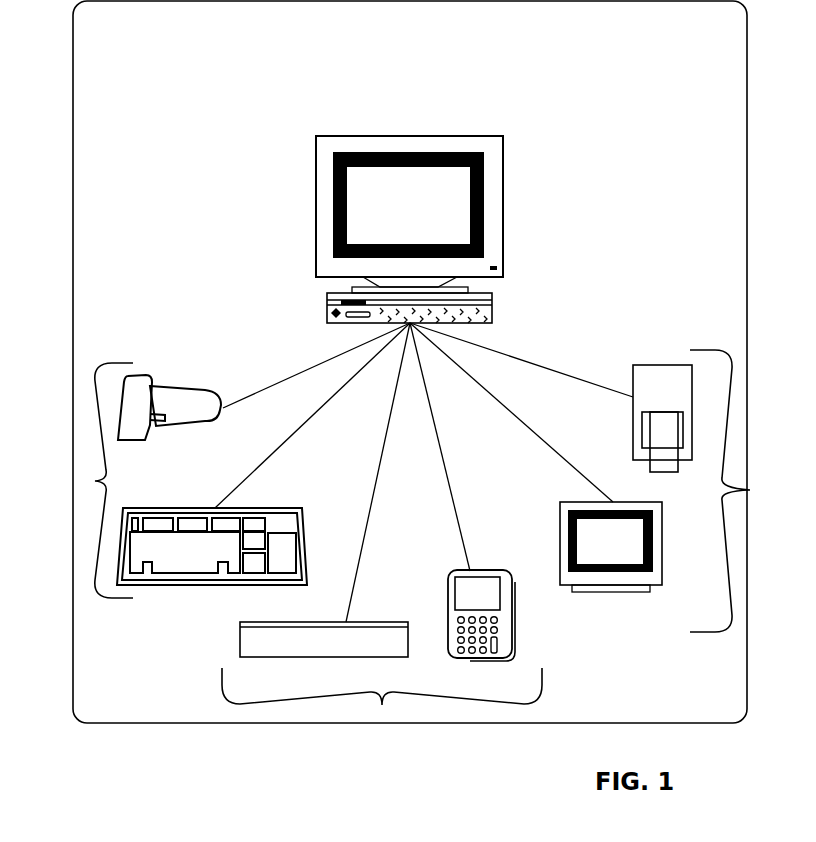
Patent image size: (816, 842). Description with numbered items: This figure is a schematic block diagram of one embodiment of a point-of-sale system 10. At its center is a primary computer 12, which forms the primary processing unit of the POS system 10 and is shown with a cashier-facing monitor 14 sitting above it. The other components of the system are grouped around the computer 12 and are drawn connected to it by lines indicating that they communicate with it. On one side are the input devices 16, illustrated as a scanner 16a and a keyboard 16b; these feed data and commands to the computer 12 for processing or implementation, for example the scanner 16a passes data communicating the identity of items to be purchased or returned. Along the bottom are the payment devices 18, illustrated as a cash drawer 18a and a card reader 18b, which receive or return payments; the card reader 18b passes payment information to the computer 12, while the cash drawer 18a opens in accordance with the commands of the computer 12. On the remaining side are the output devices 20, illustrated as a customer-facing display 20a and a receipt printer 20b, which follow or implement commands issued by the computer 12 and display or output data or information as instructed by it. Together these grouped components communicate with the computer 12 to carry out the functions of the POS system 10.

The POS system 10 is at (582, 62).
The computer 12 is at (516, 289).
The monitor 14 is at (294, 171).
The input devices 16 is at (95, 481).
The scanner 16a is at (185, 405).
The keyboard 16b is at (278, 518).
The payment devices 18 is at (382, 705).
The cash drawer 18a is at (325, 640).
The card reader 18b is at (470, 573).
The output devices 20 is at (750, 490).
The customer-facing display 20a is at (606, 555).
The receipt printer 20b is at (653, 385).